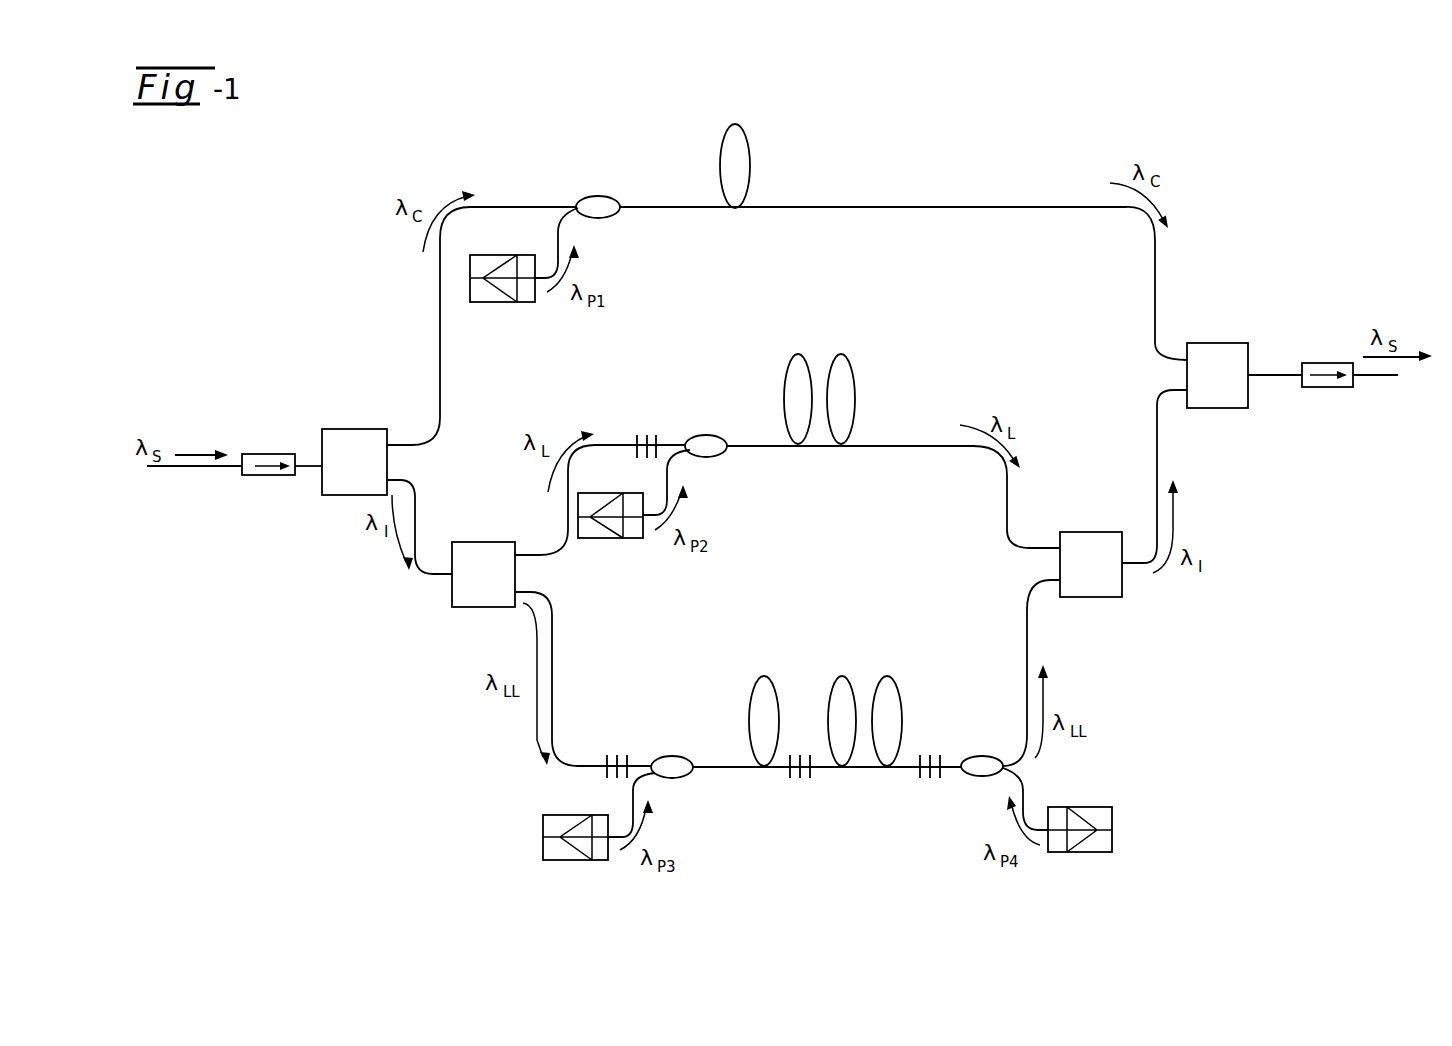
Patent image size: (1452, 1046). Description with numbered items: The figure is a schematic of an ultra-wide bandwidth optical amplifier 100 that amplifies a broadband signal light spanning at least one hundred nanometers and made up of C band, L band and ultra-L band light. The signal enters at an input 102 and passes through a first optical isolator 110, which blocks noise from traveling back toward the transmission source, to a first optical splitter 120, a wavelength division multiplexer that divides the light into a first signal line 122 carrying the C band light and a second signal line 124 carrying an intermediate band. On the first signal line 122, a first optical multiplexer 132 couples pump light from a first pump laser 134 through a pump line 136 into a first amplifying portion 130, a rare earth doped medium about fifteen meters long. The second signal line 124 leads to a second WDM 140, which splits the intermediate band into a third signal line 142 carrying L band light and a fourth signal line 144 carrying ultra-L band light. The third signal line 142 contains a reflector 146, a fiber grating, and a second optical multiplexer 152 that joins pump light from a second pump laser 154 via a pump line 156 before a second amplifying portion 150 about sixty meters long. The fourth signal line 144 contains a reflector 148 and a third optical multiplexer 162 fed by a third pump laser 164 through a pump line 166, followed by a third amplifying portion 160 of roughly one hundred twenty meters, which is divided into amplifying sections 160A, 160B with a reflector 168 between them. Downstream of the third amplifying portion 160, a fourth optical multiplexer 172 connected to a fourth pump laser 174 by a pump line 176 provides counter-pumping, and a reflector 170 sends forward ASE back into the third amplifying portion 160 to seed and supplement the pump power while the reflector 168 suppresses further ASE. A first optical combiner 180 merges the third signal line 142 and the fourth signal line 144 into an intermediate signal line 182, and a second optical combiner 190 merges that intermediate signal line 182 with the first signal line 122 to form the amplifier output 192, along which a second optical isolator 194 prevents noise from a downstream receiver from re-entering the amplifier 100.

The optical amplifier 100 is at (573, 145).
The input 102 is at (188, 468).
The first optical isolator 110 is at (273, 454).
The first optical splitter 120 is at (357, 429).
The first signal line 122 is at (440, 305).
The second signal line 124 is at (420, 572).
The first amplifying portion 130 is at (722, 150).
The first optical multiplexer 132 is at (597, 196).
The first pump laser 134 is at (503, 255).
The pump line 136 is at (560, 226).
The second WDM 140 is at (487, 542).
The third signal line 142 is at (625, 445).
The fourth signal line 144 is at (560, 765).
The reflector 146 is at (648, 435).
The reflector 148 is at (610, 757).
The second amplifying portion 150 is at (795, 357).
The second optical multiplexer 152 is at (705, 435).
The second pump laser 154 is at (607, 538).
The pump line 156 is at (667, 470).
The third amplifying portion 160 is at (824, 654).
The amplifying section 160A is at (752, 690).
The amplifying section 160B is at (908, 705).
The third optical multiplexer 162 is at (672, 757).
The third pump laser 164 is at (543, 840).
The pump line 166 is at (630, 797).
The reflector 168 is at (790, 775).
The reflector 170 is at (918, 775).
The fourth optical multiplexer 172 is at (983, 752).
The fourth pump laser 174 is at (1112, 817).
The pump line 176 is at (1027, 793).
The first optical combiner 180 is at (1093, 532).
The intermediate signal line 182 is at (1158, 447).
The second optical combiner 190 is at (1222, 343).
The amplifier output 192 is at (1278, 372).
The second optical isolator 194 is at (1327, 363).